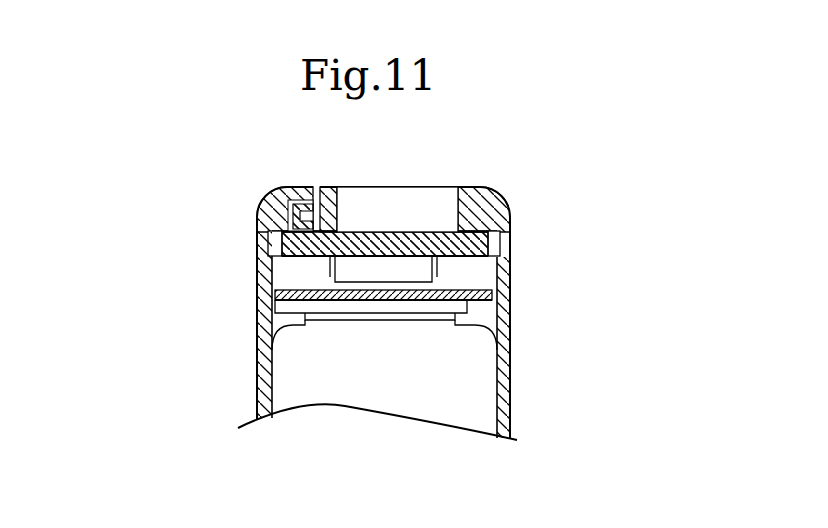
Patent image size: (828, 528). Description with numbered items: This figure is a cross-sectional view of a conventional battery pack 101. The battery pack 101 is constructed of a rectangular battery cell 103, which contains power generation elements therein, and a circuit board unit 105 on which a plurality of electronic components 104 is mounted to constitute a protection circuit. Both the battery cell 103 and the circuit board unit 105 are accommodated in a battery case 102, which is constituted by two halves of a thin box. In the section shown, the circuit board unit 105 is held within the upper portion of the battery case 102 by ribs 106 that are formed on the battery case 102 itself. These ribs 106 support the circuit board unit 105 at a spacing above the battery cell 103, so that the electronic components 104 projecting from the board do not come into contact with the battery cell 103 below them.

The battery pack 101 is at (233, 293).
The battery case 102 is at (257, 373).
The battery cell 103 is at (377, 398).
The electronic components 104 is at (418, 272).
The circuit board unit 105 is at (392, 231).
The ribs 106 is at (268, 257).